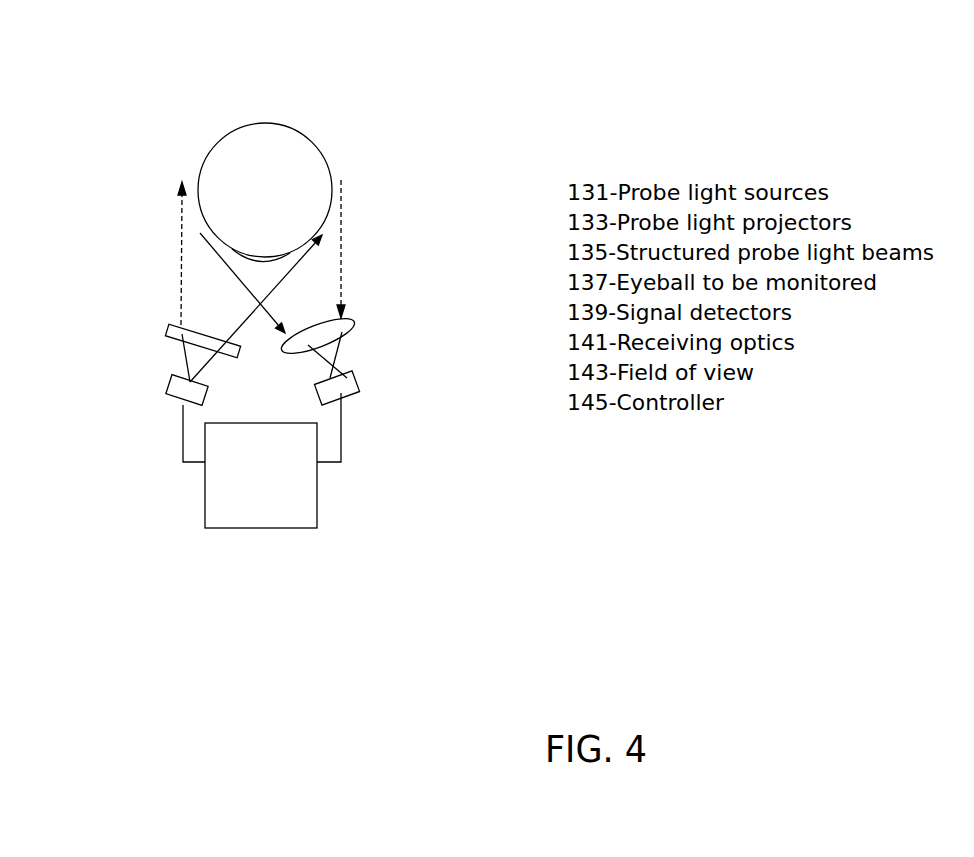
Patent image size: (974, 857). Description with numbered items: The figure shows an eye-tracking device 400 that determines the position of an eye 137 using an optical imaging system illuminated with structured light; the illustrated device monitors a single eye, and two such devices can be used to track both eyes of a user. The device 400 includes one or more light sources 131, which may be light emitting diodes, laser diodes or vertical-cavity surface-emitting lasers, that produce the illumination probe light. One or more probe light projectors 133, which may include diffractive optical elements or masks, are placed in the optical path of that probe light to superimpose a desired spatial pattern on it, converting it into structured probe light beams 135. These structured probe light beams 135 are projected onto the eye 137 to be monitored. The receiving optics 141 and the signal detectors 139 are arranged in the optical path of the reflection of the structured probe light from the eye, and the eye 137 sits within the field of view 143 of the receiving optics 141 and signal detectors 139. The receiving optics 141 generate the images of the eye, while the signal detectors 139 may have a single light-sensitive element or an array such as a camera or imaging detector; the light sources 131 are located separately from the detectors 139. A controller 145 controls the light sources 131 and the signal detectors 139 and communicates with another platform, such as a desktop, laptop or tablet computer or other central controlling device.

The eye-tracking device 400 is at (278, 34).
The light sources 131 is at (168, 393).
The probe light projectors 133 is at (175, 337).
The structured probe light beams 135 is at (192, 293).
The eye 137 is at (285, 183).
The signal detectors 139 is at (357, 390).
The receiving optics 141 is at (352, 331).
The field of view 143 is at (275, 313).
The controller 145 is at (318, 505).